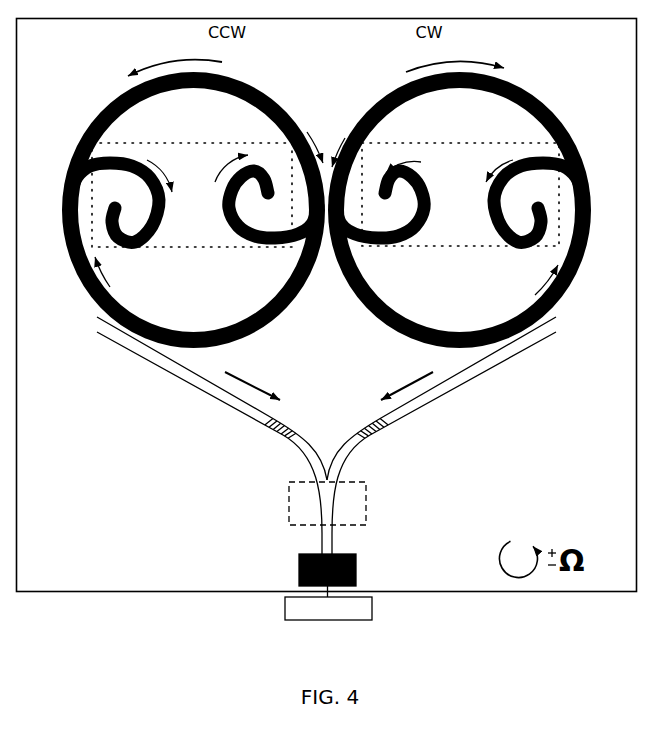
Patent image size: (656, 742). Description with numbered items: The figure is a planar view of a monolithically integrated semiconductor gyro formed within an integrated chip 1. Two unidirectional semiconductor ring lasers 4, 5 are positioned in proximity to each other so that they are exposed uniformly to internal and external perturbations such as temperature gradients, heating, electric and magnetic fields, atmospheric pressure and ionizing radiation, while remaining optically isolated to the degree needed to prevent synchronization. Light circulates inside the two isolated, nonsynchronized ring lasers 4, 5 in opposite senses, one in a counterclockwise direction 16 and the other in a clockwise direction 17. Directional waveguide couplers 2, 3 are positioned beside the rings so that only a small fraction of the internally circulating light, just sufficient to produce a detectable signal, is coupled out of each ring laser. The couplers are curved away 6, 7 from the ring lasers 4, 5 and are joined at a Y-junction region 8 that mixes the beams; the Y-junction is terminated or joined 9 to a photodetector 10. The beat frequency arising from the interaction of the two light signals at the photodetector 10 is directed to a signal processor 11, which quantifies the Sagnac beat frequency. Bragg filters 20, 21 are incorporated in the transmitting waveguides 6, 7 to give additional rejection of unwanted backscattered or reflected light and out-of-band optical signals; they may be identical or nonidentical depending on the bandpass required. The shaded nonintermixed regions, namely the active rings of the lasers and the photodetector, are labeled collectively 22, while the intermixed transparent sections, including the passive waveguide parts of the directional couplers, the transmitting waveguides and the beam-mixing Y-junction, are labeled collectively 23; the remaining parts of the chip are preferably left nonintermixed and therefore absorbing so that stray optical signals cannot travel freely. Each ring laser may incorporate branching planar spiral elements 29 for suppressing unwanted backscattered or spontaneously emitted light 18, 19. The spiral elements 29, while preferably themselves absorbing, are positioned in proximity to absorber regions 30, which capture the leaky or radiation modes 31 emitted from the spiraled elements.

The substrate 1 is at (327, 305).
The directional waveguide coupler 2 is at (200, 425).
The directional waveguide coupler 3 is at (454, 425).
The unidirectional ring laser 4 is at (558, 122).
The unidirectional ring laser 5 is at (90, 125).
The transmitting waveguide 6 is at (217, 398).
The transmitting waveguide 7 is at (441, 397).
The Y-junction region 8 is at (368, 518).
The junction to photodetector 9 is at (323, 551).
The photodetector 10 is at (358, 570).
The signal processor 11 is at (373, 610).
The counterclockwise current direction 16 is at (253, 385).
The clockwise current direction 17 is at (408, 385).
The unwanted backscattered or spontaneously emitted light 18 is at (163, 152).
The unwanted backscattered or spontaneously emitted light 19 is at (340, 138).
The Bragg filter 20 is at (280, 437).
The Bragg filter 21 is at (376, 435).
The nonintermixed regions 22 is at (120, 95).
The intermixed transparent sections 23 is at (178, 368).
The branching planar spiral element 29 is at (248, 238).
The absorber region 30 is at (177, 143).
The leaky or radiation modes 31 is at (219, 201).